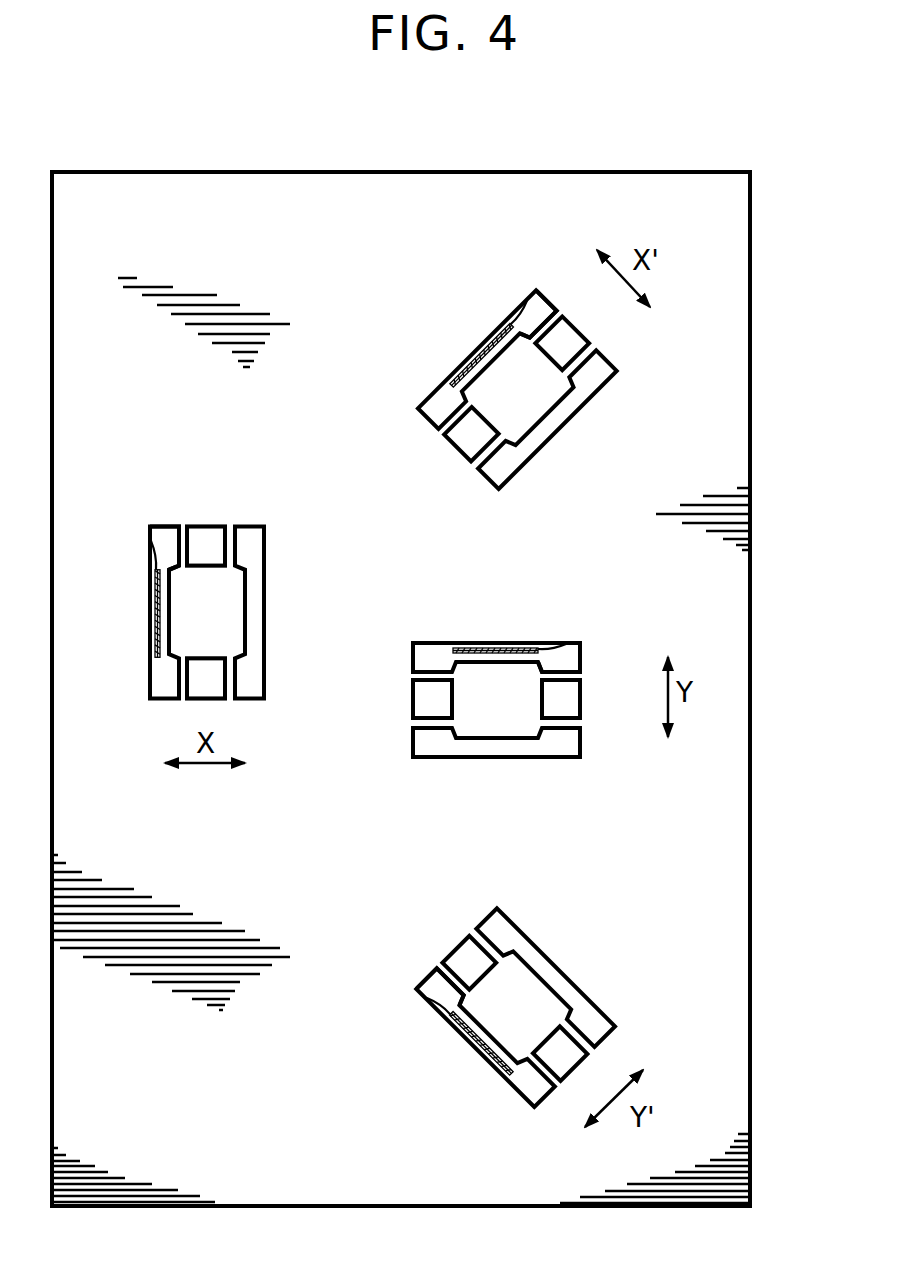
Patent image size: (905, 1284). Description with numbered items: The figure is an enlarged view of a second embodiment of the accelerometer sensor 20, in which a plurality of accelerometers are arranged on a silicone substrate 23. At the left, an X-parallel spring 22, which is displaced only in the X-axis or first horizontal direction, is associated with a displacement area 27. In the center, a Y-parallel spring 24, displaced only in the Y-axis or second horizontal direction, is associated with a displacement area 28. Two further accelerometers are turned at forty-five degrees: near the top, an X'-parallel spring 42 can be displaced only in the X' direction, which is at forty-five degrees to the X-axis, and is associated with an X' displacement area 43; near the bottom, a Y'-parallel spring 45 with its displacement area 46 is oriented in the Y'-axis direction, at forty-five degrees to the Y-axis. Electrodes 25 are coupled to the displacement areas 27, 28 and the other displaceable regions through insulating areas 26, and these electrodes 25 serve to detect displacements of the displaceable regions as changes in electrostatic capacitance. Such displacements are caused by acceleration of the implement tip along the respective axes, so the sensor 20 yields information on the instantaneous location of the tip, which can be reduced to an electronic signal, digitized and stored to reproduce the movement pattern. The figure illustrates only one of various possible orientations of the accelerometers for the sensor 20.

The accelerometer sensor 20 is at (150, 157).
The X-parallel spring 22 is at (178, 562).
The silicone substrate 23 is at (712, 870).
The Y-parallel spring 24 is at (570, 667).
The electrodes 25 is at (162, 567).
The insulating areas 26 is at (150, 612).
The displacement area 27 is at (222, 621).
The displacement area 28 is at (512, 709).
The X'-parallel spring 42 is at (544, 318).
The X' displacement area 43 is at (528, 397).
The Y'-parallel spring 45 is at (450, 984).
The displacement area 46 is at (533, 1017).